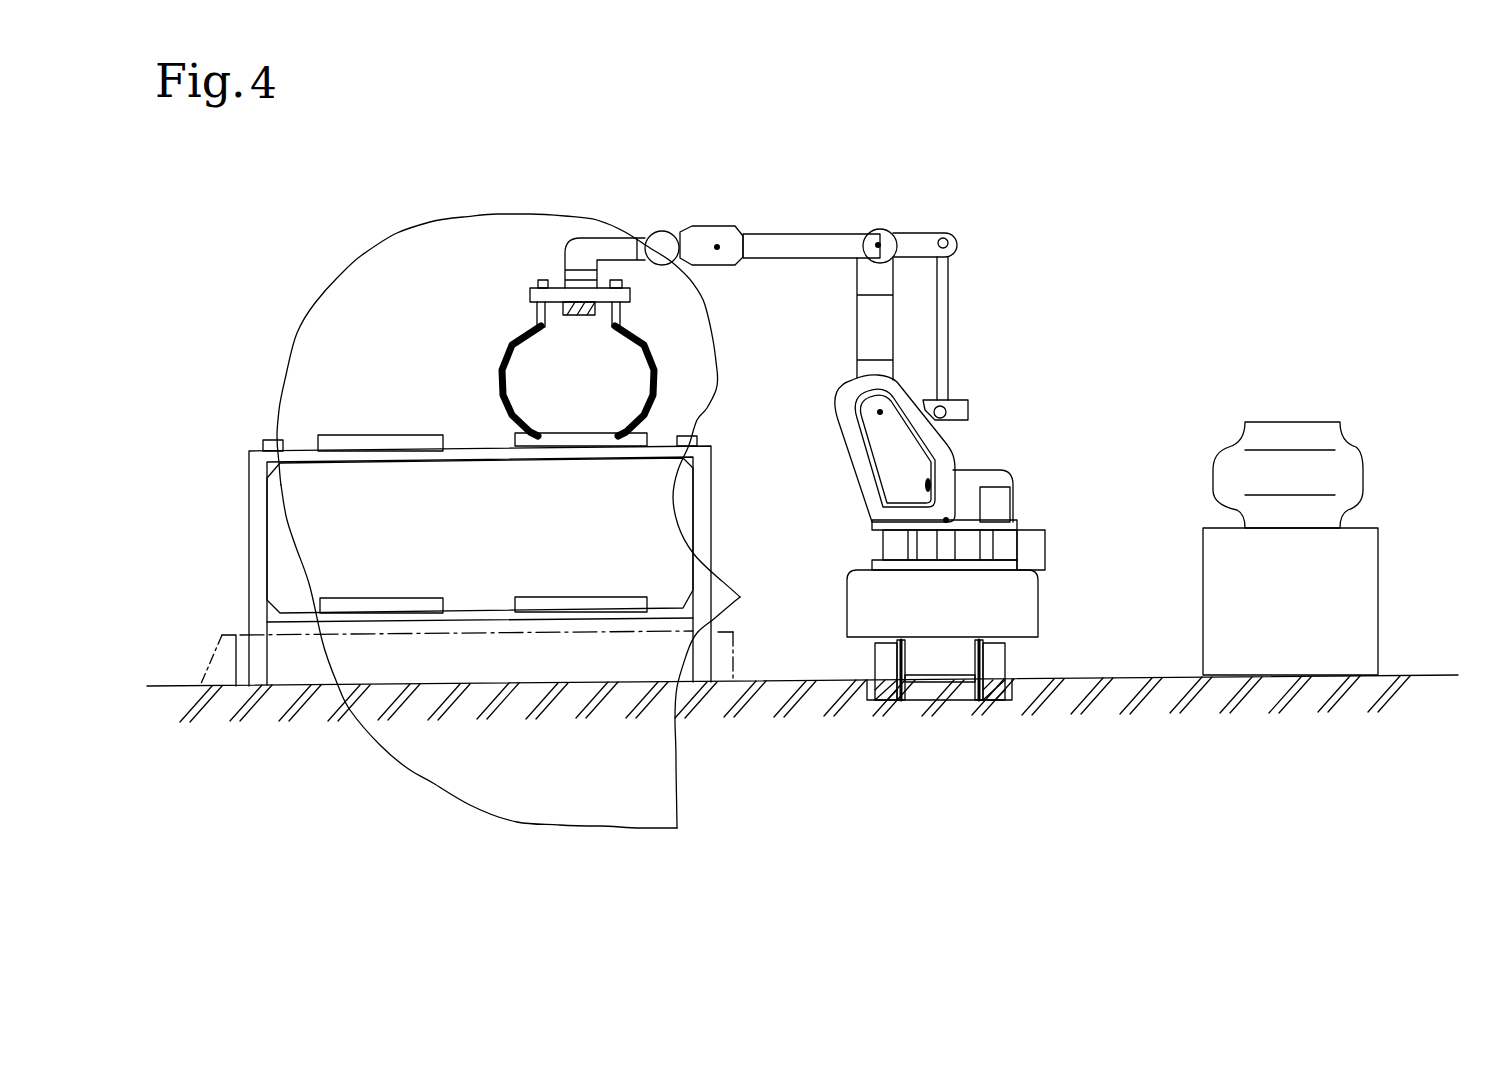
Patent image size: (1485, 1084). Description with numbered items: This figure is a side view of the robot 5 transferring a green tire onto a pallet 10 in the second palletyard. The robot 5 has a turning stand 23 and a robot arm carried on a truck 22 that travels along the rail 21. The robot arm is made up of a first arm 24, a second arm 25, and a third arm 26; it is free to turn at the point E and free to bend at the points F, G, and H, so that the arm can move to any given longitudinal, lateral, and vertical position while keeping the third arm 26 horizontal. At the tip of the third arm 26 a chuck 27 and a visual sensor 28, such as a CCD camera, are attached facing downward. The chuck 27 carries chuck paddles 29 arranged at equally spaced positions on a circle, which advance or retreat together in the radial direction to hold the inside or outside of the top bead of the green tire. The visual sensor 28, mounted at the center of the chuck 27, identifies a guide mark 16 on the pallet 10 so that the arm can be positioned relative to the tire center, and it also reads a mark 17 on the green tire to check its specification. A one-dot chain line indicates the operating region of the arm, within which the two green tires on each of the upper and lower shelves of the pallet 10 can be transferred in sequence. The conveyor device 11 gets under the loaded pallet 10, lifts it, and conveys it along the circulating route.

The robot 5 is at (855, 490).
The pallet 10 is at (235, 510).
The conveyor device 11 is at (203, 658).
The guide mark 16 is at (705, 411).
The mark 17 is at (667, 320).
The rail 21 is at (993, 700).
The truck 22 is at (1013, 602).
The turning stand 23 is at (983, 478).
The first arm 24 is at (867, 325).
The second arm 25 is at (823, 238).
The third arm 26 is at (617, 240).
The chuck 27 is at (523, 297).
The visual sensor 28 is at (563, 313).
The chuck paddles 29 is at (543, 330).
The bending point H is at (717, 247).
The bending point G is at (878, 245).
The bending point F is at (880, 413).
The turning point E is at (947, 519).